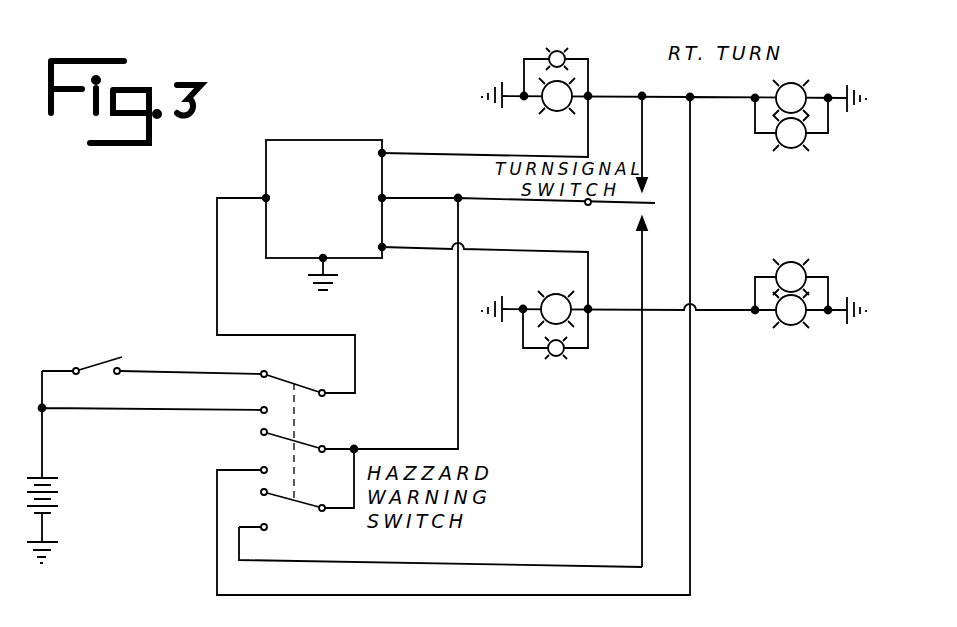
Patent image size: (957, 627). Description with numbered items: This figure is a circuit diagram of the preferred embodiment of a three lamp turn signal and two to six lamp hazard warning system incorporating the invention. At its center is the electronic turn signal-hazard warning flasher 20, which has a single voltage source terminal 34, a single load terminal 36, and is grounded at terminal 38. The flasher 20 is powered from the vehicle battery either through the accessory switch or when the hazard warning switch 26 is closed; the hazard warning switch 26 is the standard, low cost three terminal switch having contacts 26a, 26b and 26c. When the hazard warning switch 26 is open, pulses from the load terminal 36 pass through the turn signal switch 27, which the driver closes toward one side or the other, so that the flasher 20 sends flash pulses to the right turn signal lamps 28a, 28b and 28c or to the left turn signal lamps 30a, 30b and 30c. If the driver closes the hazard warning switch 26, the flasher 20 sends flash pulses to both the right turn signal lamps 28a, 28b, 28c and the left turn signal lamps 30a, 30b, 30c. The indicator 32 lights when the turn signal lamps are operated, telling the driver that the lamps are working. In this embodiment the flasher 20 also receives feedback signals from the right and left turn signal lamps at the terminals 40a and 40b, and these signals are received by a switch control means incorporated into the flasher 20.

The electronic turn signal-hazard warning flasher 20 is at (323, 133).
The voltage source terminal 34 is at (270, 199).
The load terminal 36 is at (380, 198).
The ground terminal 38 is at (323, 256).
The feedback terminal 40a is at (384, 152).
The feedback terminal 40b is at (384, 247).
The indicator 32 is at (561, 51).
The right turn signal lamp 28a is at (557, 112).
The right turn signal lamp 28b is at (791, 82).
The right turn signal lamp 28c is at (791, 149).
The left turn signal lamp 30a is at (556, 294).
The left turn signal lamp 30b is at (791, 326).
The left turn signal lamp 30c is at (791, 261).
The turn signal switch 27 is at (590, 206).
The hazard warning switch 26 is at (324, 460).
The hazard warning switch contact 26a is at (300, 503).
The hazard warning switch contact 26b is at (301, 444).
The hazard warning switch contact 26c is at (296, 386).